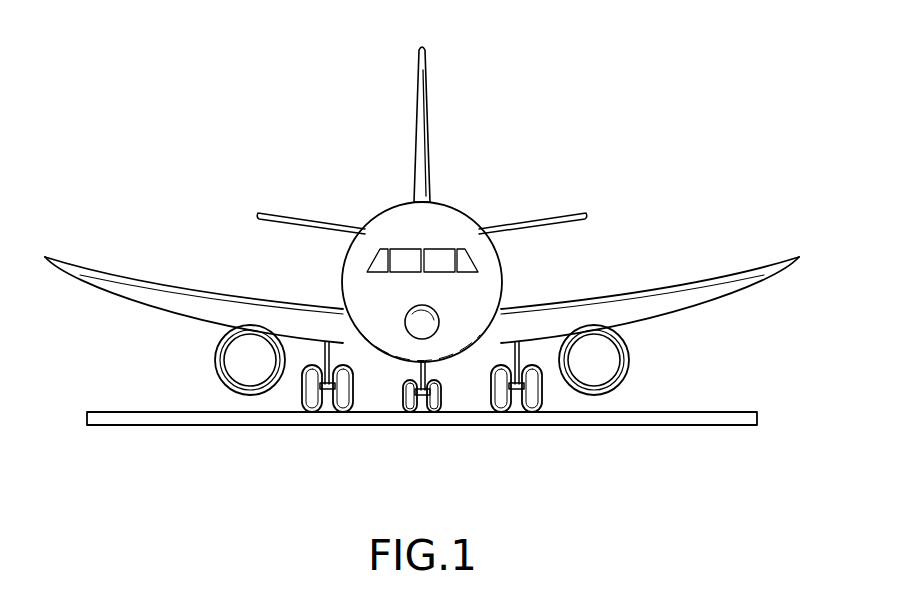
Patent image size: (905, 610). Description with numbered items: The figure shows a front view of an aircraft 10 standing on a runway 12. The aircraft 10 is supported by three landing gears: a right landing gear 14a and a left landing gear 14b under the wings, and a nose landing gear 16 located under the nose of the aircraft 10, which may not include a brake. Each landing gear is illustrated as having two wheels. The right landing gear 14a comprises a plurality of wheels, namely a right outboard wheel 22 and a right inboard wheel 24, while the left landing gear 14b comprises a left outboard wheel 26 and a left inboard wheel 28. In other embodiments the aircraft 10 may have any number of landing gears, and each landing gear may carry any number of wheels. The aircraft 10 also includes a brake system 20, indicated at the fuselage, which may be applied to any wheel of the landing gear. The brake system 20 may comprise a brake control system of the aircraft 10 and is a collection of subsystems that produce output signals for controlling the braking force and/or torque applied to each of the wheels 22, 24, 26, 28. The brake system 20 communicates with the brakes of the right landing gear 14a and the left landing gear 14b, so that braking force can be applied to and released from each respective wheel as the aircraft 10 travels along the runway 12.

The aircraft 10 is at (230, 92).
The runway 12 is at (720, 412).
The right landing gear 14a is at (328, 405).
The left landing gear 14b is at (516, 405).
The nose landing gear 16 is at (423, 398).
The brake system 20 is at (422, 238).
The right outboard wheel 22 is at (298, 398).
The right inboard wheel 24 is at (346, 398).
The left outboard wheel 26 is at (545, 398).
The left inboard wheel 28 is at (492, 398).